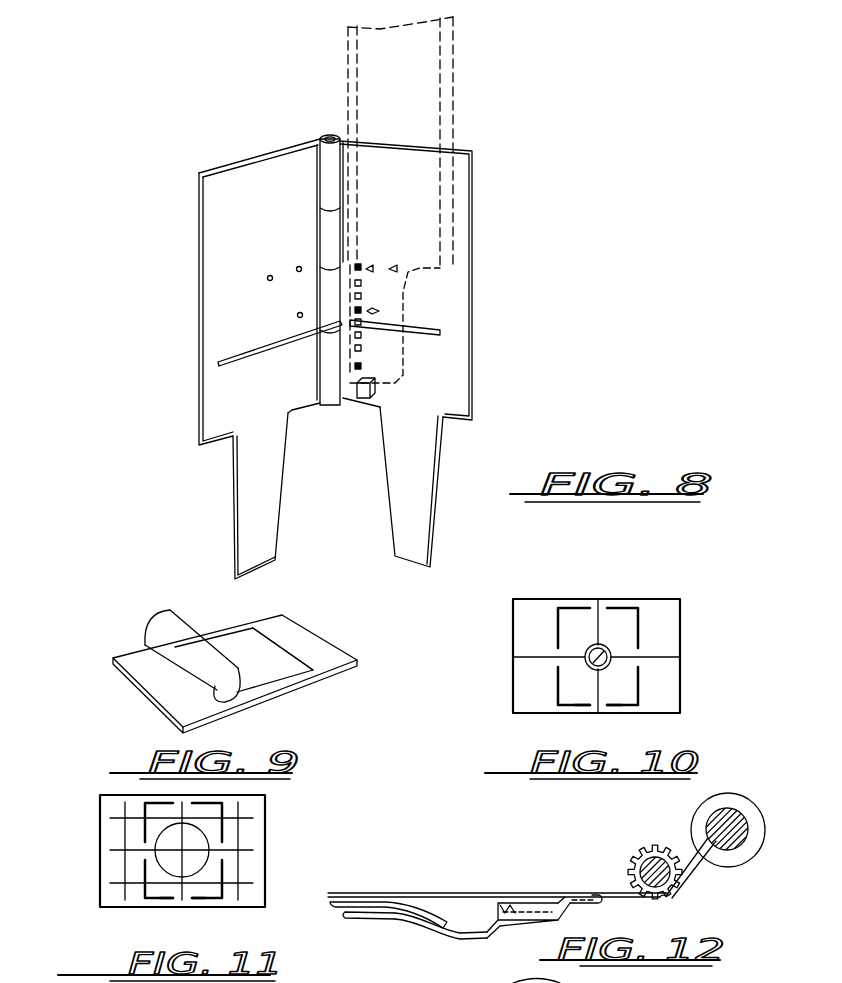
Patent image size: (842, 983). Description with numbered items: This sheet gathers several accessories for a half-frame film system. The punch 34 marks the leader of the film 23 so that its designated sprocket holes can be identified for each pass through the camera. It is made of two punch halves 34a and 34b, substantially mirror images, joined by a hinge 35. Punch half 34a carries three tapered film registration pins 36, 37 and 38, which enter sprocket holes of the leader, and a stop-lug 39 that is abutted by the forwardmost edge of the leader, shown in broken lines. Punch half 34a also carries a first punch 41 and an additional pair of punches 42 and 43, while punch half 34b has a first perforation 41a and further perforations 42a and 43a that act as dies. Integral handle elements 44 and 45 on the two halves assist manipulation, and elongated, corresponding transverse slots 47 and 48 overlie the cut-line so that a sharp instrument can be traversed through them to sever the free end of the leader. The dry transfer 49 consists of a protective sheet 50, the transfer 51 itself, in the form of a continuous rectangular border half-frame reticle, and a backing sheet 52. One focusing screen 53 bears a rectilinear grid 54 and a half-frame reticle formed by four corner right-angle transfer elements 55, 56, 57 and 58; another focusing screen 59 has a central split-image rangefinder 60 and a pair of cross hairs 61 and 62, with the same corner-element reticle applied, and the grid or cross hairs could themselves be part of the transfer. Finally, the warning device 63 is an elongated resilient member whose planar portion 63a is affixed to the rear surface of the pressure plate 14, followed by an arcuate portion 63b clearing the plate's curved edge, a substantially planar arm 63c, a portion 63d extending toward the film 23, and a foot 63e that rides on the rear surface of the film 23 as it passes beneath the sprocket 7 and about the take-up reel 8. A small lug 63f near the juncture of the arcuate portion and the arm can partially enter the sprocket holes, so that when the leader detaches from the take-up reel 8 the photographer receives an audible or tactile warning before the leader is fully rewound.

In FIG. 12, the sprocket 7 is at (657, 845).
In FIG. 12, the take-up reel 8 is at (729, 793).
In FIG. 12, the pressure plate 14 is at (420, 901).
In FIG. 8, the film 23 is at (457, 36).
In FIG. 12, the film 23 is at (459, 892).
In FIG. 8, the punch 34 is at (212, 173).
In FIG. 8, the punch half 34a is at (465, 232).
In FIG. 8, the punch half 34b is at (270, 165).
In FIG. 8, the hinge 35 is at (330, 135).
In FIG. 8, the film registration pin 36 is at (362, 366).
In FIG. 8, the film registration pin 37 is at (362, 309).
In FIG. 8, the film registration pin 38 is at (362, 264).
In FIG. 8, the stop-lug 39 is at (363, 398).
In FIG. 8, the first punch 41 is at (379, 311).
In FIG. 8, the first perforation 41a is at (297, 315).
In FIG. 8, the punch 42 is at (373, 268).
In FIG. 8, the perforation 42a is at (298, 266).
In FIG. 8, the punch 43 is at (397, 268).
In FIG. 8, the die hole 43a is at (268, 276).
In FIG. 8, the handle element 44 is at (411, 556).
In FIG. 8, the handle element 45 is at (262, 559).
In FIG. 8, the transverse slot 47 is at (441, 332).
In FIG. 8, the transverse slot 48 is at (218, 364).
In FIG. 9, the dry transfer 49 is at (279, 696).
In FIG. 9, the protective sheet 50 is at (170, 610).
In FIG. 9, the transfer 51 is at (287, 650).
In FIG. 9, the backing sheet 52 is at (143, 692).
In FIG. 11, the focusing screen 53 is at (103, 836).
In FIG. 11, the rectilinear grid 54 is at (123, 806).
In FIG. 10, the transfer element 55 is at (641, 620).
In FIG. 11, the transfer element 55 is at (225, 808).
In FIG. 10, the transfer element 56 is at (640, 700).
In FIG. 11, the transfer element 56 is at (204, 899).
In FIG. 10, the transfer element 57 is at (577, 707).
In FIG. 11, the transfer element 57 is at (165, 895).
In FIG. 10, the transfer element 58 is at (556, 620).
In FIG. 11, the transfer element 58 is at (157, 802).
In FIG. 10, the focusing screen 59 is at (670, 637).
In FIG. 10, the split-image rangefinder 60 is at (600, 648).
In FIG. 10, the cross hair 61 is at (645, 658).
In FIG. 10, the cross hair 62 is at (596, 648).
In FIG. 12, the warning device 63 is at (455, 911).
In FIG. 12, the planar portion 63a is at (352, 916).
In FIG. 12, the arcuate portion 63b is at (405, 924).
In FIG. 12, the planar arm 63c is at (520, 921).
In FIG. 12, the portion 63d is at (563, 913).
In FIG. 12, the foot 63e is at (600, 898).
In FIG. 12, the lug 63f is at (507, 905).